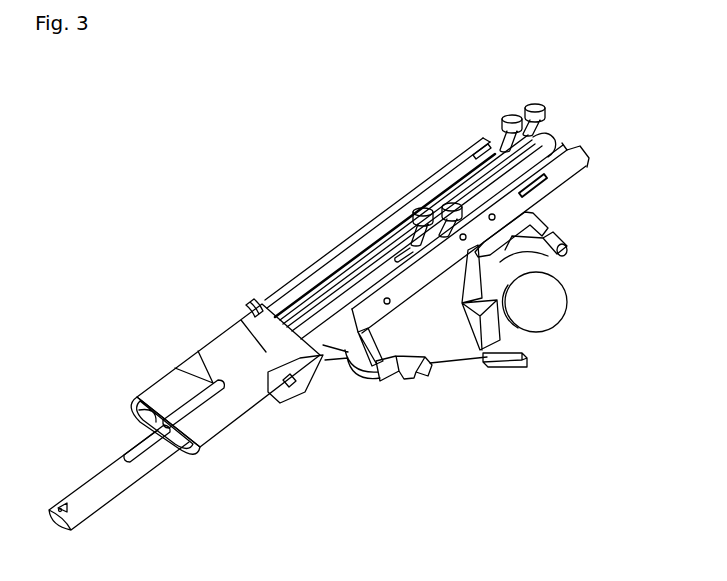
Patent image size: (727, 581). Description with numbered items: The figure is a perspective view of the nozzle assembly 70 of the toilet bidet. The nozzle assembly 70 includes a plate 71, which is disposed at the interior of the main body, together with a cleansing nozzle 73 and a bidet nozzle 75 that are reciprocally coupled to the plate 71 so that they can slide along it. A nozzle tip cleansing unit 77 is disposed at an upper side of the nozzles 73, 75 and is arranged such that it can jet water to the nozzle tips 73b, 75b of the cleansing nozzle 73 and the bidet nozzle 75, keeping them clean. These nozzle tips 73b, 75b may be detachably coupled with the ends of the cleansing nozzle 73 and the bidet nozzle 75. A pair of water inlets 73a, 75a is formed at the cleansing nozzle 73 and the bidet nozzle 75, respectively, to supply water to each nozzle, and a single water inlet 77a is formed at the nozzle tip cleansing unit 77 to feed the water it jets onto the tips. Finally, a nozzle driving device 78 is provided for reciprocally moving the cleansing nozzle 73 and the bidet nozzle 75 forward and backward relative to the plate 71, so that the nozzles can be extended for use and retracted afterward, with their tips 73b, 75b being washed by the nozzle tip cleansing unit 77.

The nozzle assembly 70 is at (268, 102).
The plate 71 is at (337, 357).
The cleansing nozzle 73 is at (340, 297).
The water inlet 73a is at (425, 203).
The nozzle tip 73b is at (100, 500).
The bidet nozzle 75 is at (337, 260).
The water inlet 75a is at (520, 110).
The nozzle tip 75b is at (152, 413).
The nozzle tip cleansing unit 77 is at (217, 340).
The water inlet 77a is at (262, 303).
The nozzle driving device 78 is at (555, 312).